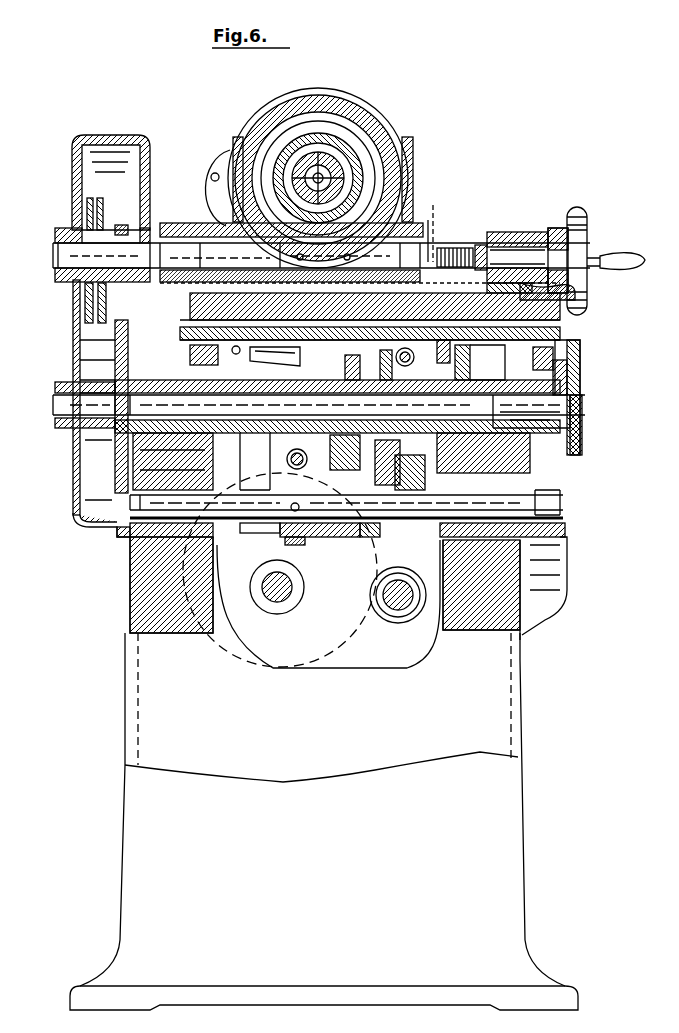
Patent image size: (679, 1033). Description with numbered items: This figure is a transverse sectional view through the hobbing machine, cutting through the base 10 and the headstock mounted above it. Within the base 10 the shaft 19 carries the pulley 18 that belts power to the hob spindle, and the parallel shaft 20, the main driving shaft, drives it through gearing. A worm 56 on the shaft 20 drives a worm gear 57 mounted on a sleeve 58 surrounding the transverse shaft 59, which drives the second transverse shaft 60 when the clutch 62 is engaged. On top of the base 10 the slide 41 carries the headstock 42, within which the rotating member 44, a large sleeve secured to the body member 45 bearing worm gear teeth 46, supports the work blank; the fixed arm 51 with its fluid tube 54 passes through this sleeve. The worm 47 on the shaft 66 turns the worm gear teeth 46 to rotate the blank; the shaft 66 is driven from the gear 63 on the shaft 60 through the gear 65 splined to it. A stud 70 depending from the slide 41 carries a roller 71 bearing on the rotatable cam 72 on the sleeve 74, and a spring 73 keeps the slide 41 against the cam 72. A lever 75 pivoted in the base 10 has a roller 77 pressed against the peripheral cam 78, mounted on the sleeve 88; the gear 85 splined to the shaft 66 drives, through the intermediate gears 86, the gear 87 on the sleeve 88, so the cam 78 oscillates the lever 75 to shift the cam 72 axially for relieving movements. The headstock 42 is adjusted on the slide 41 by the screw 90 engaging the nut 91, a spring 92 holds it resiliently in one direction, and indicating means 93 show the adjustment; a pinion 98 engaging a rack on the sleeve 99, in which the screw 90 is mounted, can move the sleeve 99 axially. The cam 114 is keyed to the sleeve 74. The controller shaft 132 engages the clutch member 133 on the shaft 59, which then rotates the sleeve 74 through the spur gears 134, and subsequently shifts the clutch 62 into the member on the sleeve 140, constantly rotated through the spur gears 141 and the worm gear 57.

The base 10 is at (138, 707).
The pulley 18 is at (225, 660).
The shaft 19 is at (277, 600).
The parallel shaft 20 is at (405, 610).
The slide 41 is at (420, 225).
The headstock 42 is at (400, 185).
The rotating member 44 is at (312, 150).
The body member 45 is at (285, 138).
The worm gear teeth 46 is at (287, 257).
The worm 47 is at (178, 247).
The arm 51 is at (325, 160).
The sleeve or tube 54 is at (375, 125).
The worm 56 is at (386, 612).
The worm gear 57 is at (415, 580).
The sleeve 58 is at (340, 540).
The transverse shaft 59 is at (130, 558).
The second transverse shaft 60 is at (101, 488).
The clutch 62 is at (287, 459).
The gear 63 is at (120, 380).
The gear 65 is at (95, 230).
The shaft 66 is at (178, 245).
The stud 70 is at (470, 318).
The roller 71 is at (495, 360).
The rotatable cam 72 is at (347, 514).
The spring 73 is at (434, 245).
The sleeve 74 is at (580, 422).
The lever 75 is at (125, 345).
The roller 77 is at (319, 411).
The rotatable cam 78 is at (240, 512).
The gear 85 is at (122, 225).
The intermediate gears 86 is at (110, 312).
The gear 87 is at (120, 330).
The sleeve 88 is at (215, 440).
The screw 90 is at (480, 245).
The nut 91 is at (455, 248).
The spring 92 is at (520, 235).
The indicating means 93 is at (555, 228).
The pinion 98 is at (575, 285).
The sleeve 99 is at (497, 235).
The cam 114 is at (578, 360).
The controller shaft 132 is at (300, 492).
The clutch member 133 is at (300, 537).
The spur gears 134 is at (575, 345).
The sleeve 140 is at (267, 354).
The spur gears 141 is at (396, 355).